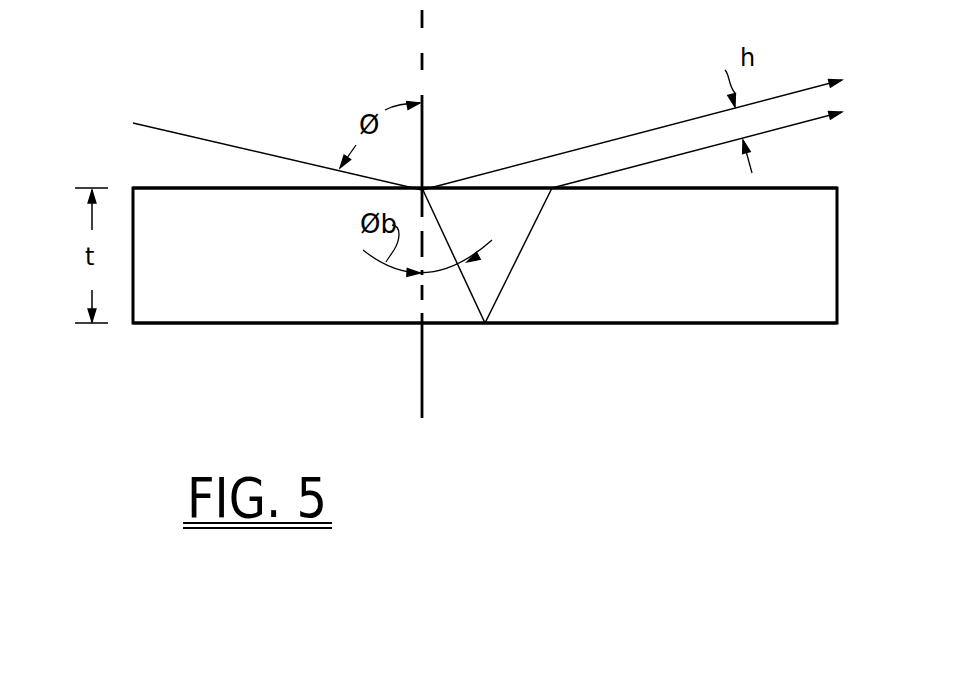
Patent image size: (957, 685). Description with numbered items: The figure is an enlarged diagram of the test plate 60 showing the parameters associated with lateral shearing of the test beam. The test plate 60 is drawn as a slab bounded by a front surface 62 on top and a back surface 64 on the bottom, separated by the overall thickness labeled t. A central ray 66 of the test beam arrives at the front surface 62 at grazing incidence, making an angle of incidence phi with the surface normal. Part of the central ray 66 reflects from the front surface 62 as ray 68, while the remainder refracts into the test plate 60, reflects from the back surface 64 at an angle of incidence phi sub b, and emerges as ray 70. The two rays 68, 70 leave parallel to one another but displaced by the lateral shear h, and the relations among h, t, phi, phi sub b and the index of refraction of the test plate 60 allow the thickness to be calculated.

The test plate 60 is at (806, 313).
The front surface 62 is at (191, 157).
The back surface 64 is at (268, 325).
The central ray 66 is at (193, 135).
The ray reflected from front surface 68 is at (698, 118).
The ray reflected from back surface 70 is at (795, 125).